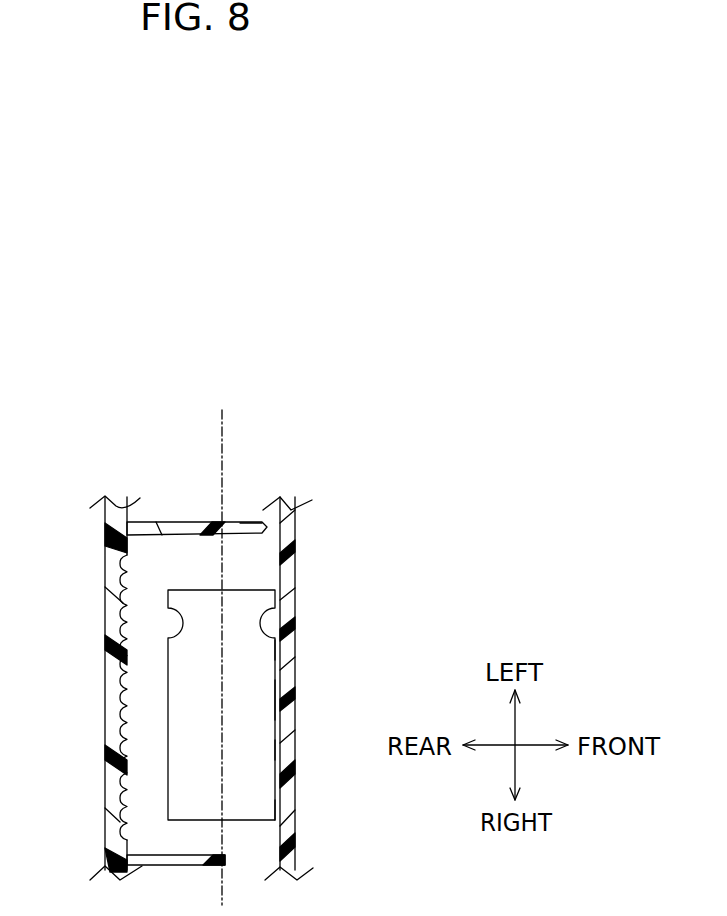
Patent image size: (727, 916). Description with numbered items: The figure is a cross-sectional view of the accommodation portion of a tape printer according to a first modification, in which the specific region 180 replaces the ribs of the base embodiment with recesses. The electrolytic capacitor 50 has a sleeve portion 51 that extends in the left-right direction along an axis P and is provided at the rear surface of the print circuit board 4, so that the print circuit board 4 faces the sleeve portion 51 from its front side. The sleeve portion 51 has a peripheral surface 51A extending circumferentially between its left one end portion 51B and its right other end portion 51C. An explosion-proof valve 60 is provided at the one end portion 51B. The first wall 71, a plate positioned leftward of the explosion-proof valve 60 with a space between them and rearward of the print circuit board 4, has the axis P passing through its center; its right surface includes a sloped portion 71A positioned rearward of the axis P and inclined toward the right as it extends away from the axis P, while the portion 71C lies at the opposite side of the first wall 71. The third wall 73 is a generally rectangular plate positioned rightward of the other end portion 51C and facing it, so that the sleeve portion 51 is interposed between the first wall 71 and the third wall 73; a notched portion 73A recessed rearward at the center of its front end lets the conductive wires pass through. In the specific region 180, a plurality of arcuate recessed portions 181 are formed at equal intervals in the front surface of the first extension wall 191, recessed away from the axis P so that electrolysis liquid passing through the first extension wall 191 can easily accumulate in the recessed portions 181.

The axis P is at (222, 450).
The print circuit board 4 is at (289, 580).
The electrolytic capacitor 50 is at (255, 572).
The sleeve portion 51 is at (260, 703).
The peripheral surface 51A is at (175, 762).
The one end portion 51B is at (277, 637).
The other end portion 51C is at (273, 838).
The explosion-proof valve 60 is at (259, 607).
The first wall 71 is at (251, 512).
The sloped portion 71A is at (195, 538).
The base of top plate 71C is at (128, 523).
The third wall 73 is at (192, 860).
The notched portion 73A is at (226, 862).
The specific region 180 is at (137, 812).
The recessed portions 181 is at (126, 630).
The first extension wall 191 is at (115, 791).